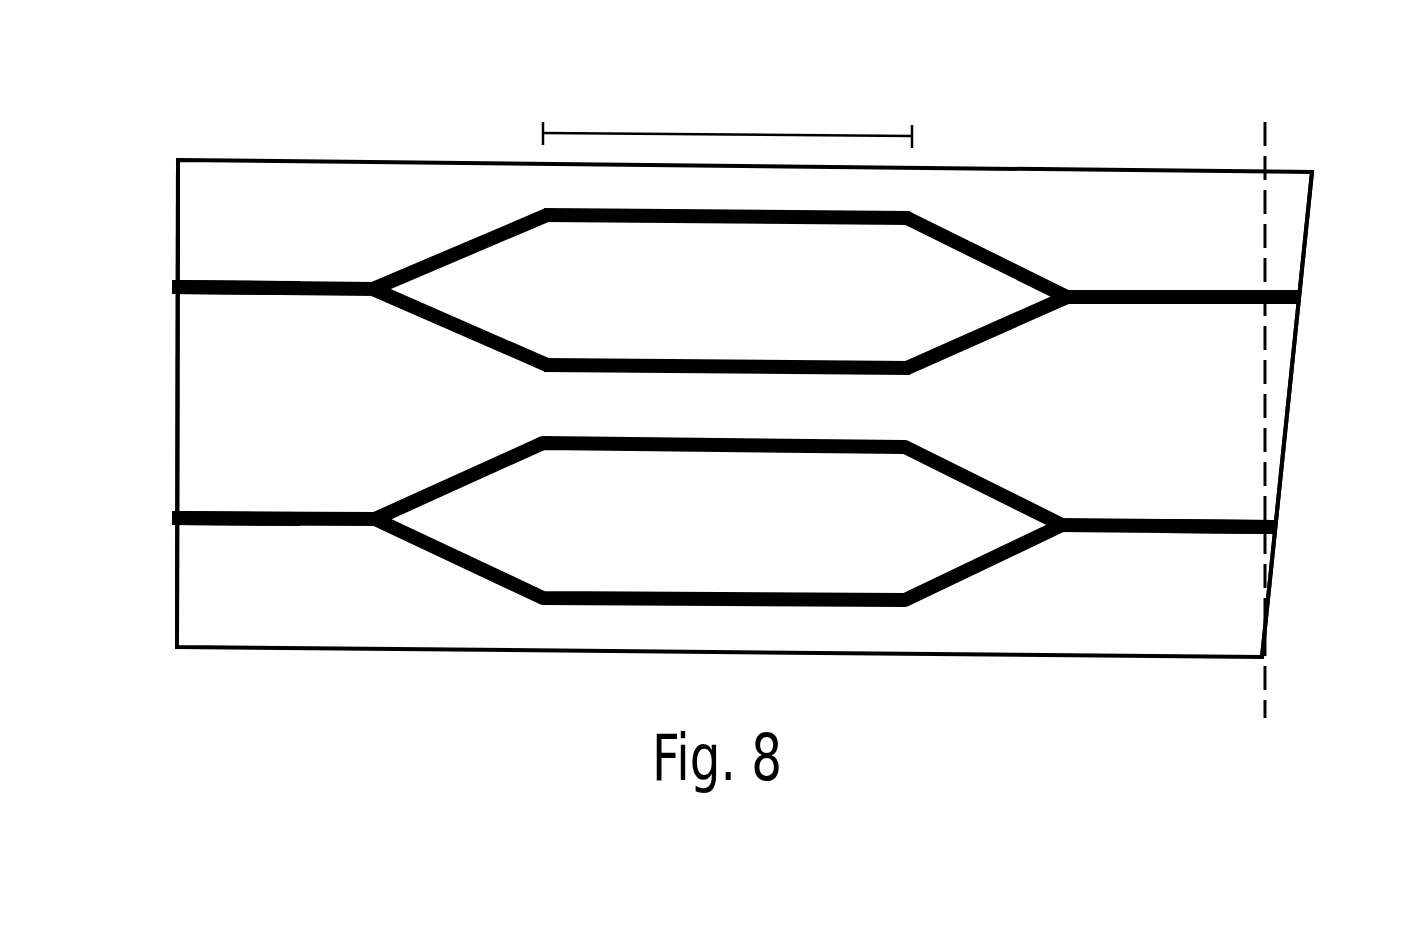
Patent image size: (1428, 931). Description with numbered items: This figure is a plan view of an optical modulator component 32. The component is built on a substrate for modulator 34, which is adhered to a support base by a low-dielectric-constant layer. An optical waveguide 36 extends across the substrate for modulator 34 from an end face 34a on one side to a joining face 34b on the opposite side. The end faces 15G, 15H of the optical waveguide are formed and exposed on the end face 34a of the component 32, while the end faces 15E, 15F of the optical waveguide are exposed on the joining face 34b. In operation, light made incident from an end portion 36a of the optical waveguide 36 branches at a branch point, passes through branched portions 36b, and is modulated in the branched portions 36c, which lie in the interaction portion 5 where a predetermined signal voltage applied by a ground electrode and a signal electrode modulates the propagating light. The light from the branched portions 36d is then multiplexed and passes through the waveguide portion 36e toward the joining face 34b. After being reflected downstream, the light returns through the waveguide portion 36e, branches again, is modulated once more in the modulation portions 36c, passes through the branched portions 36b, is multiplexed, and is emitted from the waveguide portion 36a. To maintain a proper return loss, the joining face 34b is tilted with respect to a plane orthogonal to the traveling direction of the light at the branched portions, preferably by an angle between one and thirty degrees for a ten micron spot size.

The interaction portion 5 is at (798, 133).
The optical modulator component 32 is at (1192, 148).
The substrate for modulator 34 is at (423, 180).
The end face 34a is at (178, 212).
The joining face 34b is at (1288, 417).
The optical waveguide 36 is at (736, 284).
The end portion of the optical waveguide 36a is at (298, 297).
The branched portions 36b is at (493, 248).
The branched portions 36c is at (750, 223).
The branched portions 36d is at (990, 250).
The waveguide portion 36e is at (1153, 290).
The end face of the optical waveguide 15E is at (1300, 295).
The end face of the optical waveguide 15F is at (1277, 528).
The end face of the optical waveguide 15G is at (173, 285).
The end face of the optical waveguide 15H is at (173, 517).